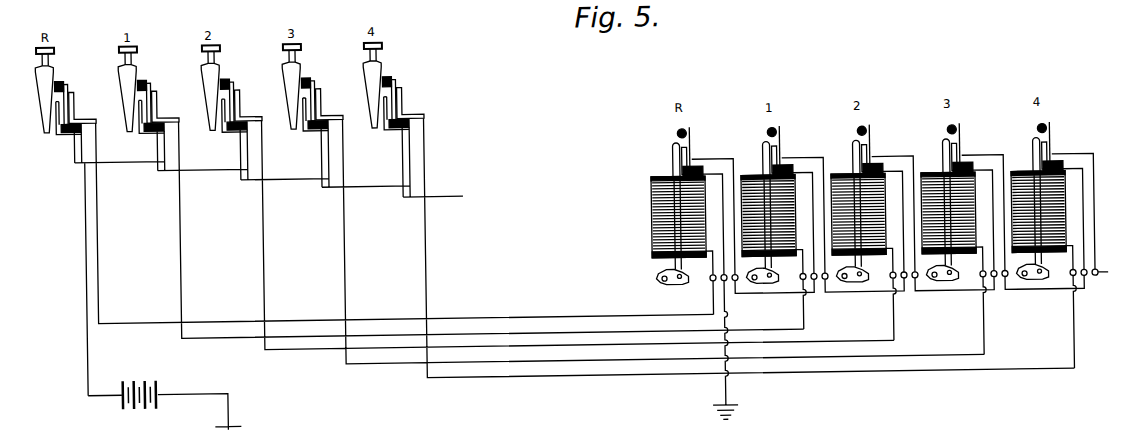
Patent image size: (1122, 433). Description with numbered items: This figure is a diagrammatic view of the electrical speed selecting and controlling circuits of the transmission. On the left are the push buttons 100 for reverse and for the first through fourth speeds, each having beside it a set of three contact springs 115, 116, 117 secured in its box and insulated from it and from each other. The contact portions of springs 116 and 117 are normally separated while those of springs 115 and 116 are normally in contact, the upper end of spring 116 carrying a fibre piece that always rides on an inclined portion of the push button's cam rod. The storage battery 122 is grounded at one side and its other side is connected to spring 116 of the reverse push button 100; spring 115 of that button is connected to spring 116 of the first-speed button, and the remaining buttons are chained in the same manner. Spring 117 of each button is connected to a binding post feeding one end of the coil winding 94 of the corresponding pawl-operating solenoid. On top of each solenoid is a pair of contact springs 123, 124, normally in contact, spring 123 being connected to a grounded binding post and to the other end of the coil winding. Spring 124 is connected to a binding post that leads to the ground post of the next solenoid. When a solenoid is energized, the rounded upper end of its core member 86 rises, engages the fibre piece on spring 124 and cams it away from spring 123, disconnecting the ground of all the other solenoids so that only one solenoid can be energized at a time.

The push button 100 is at (54, 48).
The contact spring 116 is at (62, 84).
The contact spring 117 is at (72, 108).
The contact spring 115 is at (57, 133).
The storage battery 122 is at (164, 405).
The relay magnet coil 94 is at (648, 212).
The core member 86 is at (670, 157).
The contact spring 123 is at (679, 172).
The contact spring 124 is at (689, 140).